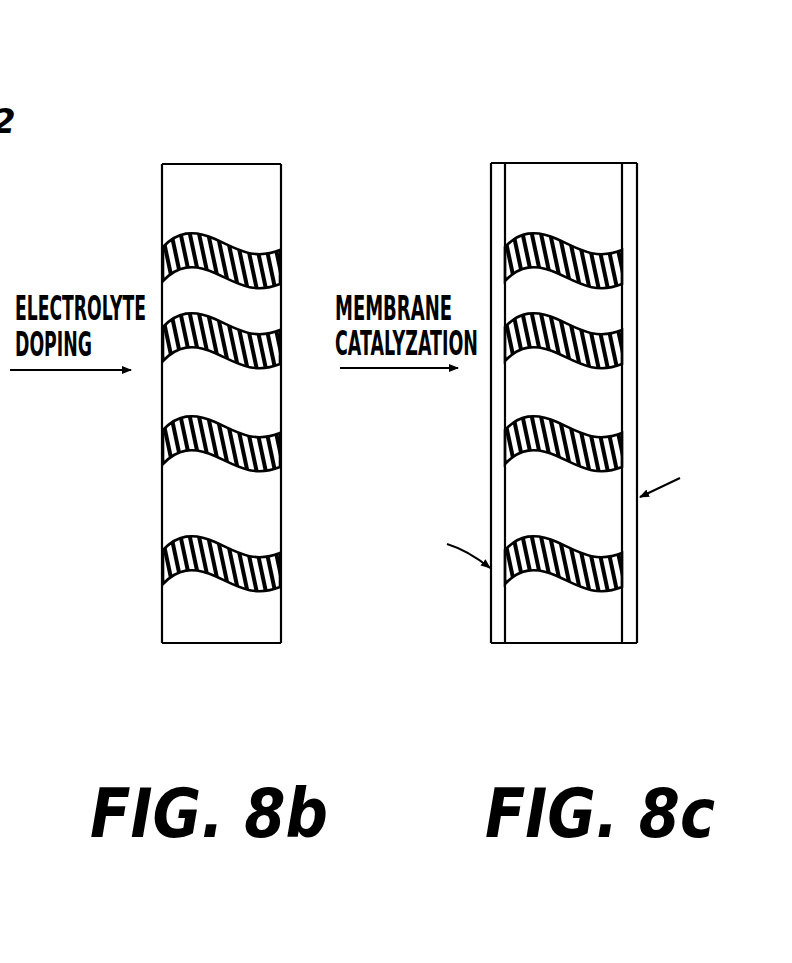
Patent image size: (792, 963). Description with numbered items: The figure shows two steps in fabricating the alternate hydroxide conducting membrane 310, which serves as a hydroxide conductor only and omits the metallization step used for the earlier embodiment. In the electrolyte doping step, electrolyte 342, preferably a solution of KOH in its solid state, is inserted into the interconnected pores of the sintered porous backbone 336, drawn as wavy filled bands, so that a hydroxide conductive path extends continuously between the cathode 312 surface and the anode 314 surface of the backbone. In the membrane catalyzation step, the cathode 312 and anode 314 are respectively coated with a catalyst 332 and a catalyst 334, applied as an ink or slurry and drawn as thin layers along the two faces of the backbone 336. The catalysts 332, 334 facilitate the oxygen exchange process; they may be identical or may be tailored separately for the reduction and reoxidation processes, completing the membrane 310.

In FIG. 8C, the hydroxide conducting membrane 310 is at (575, 400).
In FIG. 8B, the cathode 312 is at (281, 206).
In FIG. 8C, the cathode 312 is at (624, 163).
In FIG. 8B, the anode 314 is at (162, 206).
In FIG. 8C, the anode 314 is at (503, 163).
In FIG. 8C, the catalyst 332 is at (638, 400).
In FIG. 8C, the catalyst 334 is at (491, 440).
In FIG. 8C, the porous backbone 336 is at (597, 628).
In FIG. 8B, the electrolyte 342 is at (162, 445).